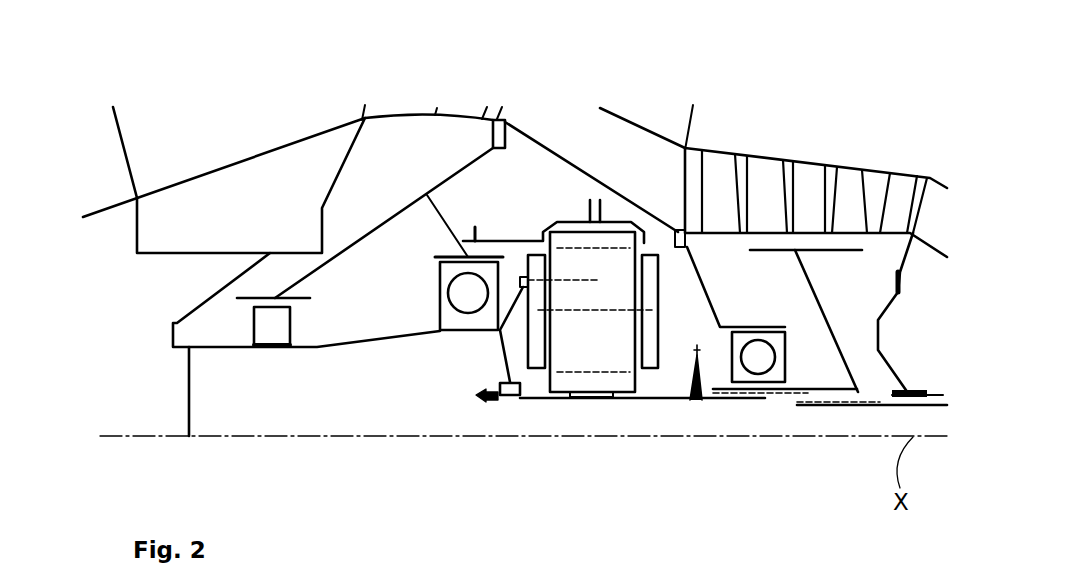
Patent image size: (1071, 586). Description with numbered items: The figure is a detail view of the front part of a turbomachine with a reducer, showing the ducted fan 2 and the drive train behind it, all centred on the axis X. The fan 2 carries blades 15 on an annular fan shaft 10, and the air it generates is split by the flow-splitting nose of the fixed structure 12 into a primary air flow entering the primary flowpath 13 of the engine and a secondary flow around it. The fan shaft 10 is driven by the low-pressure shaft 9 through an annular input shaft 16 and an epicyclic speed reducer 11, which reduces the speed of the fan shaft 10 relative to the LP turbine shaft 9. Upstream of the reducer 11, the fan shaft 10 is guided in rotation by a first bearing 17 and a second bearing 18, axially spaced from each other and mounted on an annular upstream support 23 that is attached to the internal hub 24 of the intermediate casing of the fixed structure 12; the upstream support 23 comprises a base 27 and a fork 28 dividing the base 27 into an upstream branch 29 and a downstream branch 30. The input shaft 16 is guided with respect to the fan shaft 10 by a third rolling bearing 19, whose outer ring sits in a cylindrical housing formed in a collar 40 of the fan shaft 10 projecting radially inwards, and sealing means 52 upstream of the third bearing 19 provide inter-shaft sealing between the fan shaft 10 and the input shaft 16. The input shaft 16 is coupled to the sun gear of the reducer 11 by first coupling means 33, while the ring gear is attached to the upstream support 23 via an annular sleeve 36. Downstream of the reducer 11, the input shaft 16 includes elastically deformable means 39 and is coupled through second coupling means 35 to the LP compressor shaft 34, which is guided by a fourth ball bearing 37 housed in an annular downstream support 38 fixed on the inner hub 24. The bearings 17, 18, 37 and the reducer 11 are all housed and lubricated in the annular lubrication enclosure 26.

The ducted fan 2 is at (110, 158).
The low-pressure shaft 9 is at (928, 408).
The fan shaft 10 is at (307, 348).
The speed reducer 11 is at (588, 268).
The fixed structure 12 is at (482, 146).
The primary flowpath 13 is at (622, 147).
The blades 15 is at (165, 132).
The input shaft 16 is at (655, 402).
The first bearing 17 is at (250, 323).
The second bearing 18 is at (372, 337).
The third rolling bearing 19 is at (526, 392).
The upstream support 23 is at (410, 196).
The internal hub 24 is at (613, 185).
The lubrication enclosure 26 is at (387, 265).
The base 27 is at (470, 185).
The fork 28 is at (427, 195).
The upstream branch 29 is at (365, 225).
The downstream branch 30 is at (450, 220).
The first coupling means 33 is at (592, 401).
The LP compressor shaft 34 is at (812, 300).
The second coupling means 35 is at (747, 399).
The annular sleeve 36 is at (518, 240).
The fourth bearing 37 is at (790, 351).
The downstream support 38 is at (706, 266).
The elastically deformable means 39 is at (685, 372).
The collar 40 is at (500, 357).
The sealing means 52 is at (473, 395).